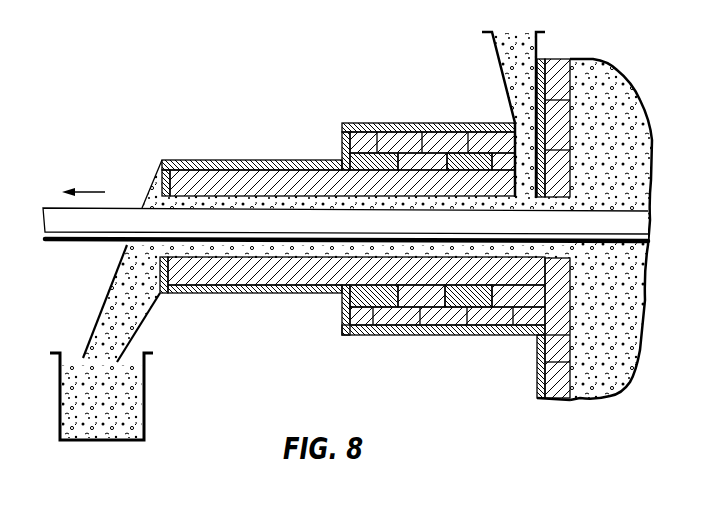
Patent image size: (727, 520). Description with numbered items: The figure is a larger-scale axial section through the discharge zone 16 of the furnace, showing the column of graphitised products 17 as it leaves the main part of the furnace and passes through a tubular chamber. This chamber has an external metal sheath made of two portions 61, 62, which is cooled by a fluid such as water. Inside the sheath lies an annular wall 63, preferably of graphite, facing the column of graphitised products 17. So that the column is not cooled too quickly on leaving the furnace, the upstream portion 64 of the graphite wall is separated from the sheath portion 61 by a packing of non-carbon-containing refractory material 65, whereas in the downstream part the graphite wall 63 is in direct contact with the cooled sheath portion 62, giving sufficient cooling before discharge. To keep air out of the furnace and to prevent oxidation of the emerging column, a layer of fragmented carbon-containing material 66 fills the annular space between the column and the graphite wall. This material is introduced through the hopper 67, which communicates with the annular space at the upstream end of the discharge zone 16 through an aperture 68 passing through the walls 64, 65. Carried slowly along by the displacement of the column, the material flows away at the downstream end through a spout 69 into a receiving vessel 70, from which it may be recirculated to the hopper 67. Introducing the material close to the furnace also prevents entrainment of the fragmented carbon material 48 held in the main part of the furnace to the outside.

The discharge zone 16 is at (330, 145).
The column of graphitised products 17 is at (122, 217).
The fragmented carbon material 48 is at (620, 87).
The sheath portion 61 is at (370, 122).
The sheath portion 62 is at (203, 161).
The annular wall 63 is at (280, 182).
The upstream portion of the graphite wall 64 is at (412, 275).
The packing of non-carbon-containing refractory material 65 is at (487, 315).
The layer of fragmented carbon-containing material 66 is at (288, 247).
The hopper 67 is at (491, 57).
The aperture 68 is at (510, 147).
The spout 69 is at (140, 302).
The receiving vessel 70 is at (125, 393).